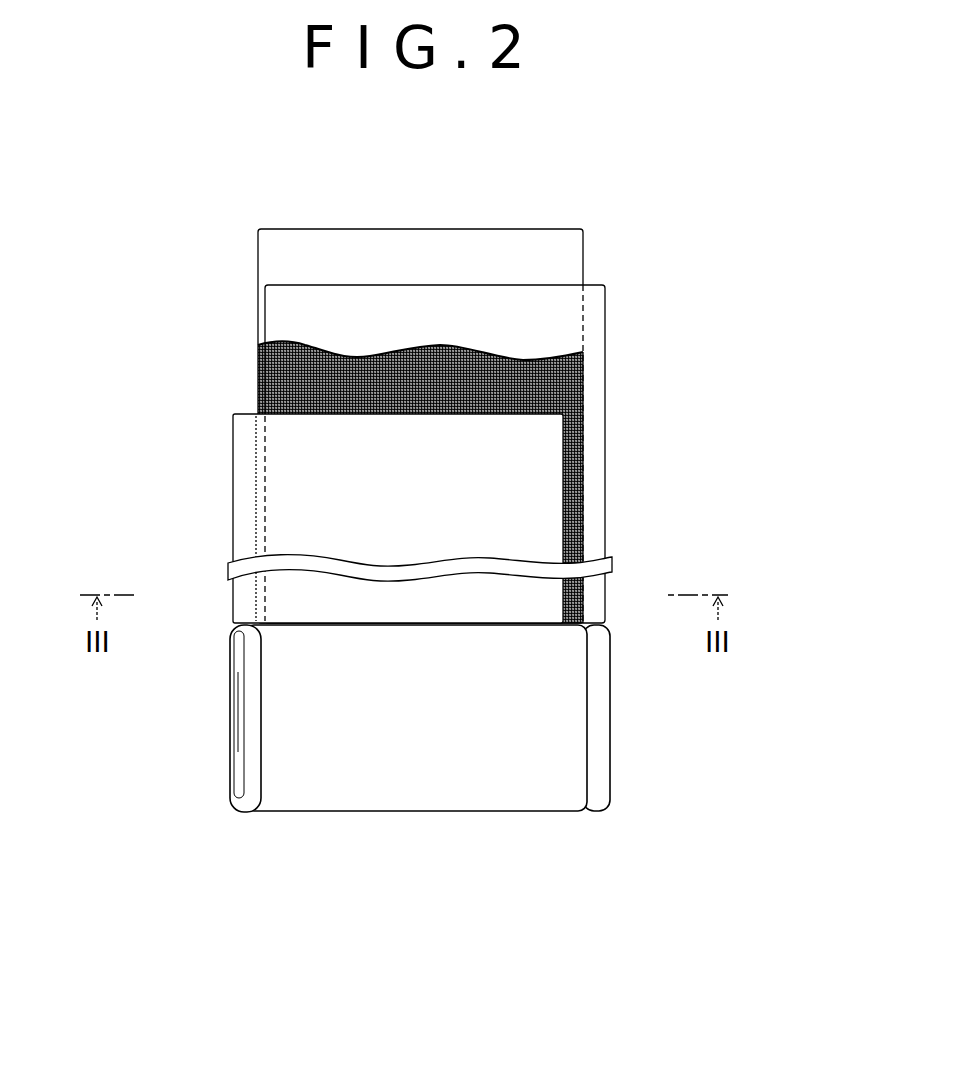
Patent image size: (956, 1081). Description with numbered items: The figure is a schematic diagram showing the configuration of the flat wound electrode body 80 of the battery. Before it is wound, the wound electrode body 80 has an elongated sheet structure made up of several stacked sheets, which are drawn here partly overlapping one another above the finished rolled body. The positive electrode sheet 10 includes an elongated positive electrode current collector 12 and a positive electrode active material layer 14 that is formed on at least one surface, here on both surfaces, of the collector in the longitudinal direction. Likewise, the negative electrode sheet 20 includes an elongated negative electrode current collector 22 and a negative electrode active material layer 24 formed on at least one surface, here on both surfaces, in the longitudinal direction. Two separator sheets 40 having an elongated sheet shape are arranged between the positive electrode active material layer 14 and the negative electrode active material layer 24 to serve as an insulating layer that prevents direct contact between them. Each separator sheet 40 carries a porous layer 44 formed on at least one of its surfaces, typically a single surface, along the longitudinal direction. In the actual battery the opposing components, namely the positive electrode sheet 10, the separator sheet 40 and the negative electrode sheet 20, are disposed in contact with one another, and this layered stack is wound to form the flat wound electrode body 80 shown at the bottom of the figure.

The positive electrode sheet 10 is at (343, 518).
The positive electrode current collector 12 is at (230, 483).
The positive electrode active material layer 14 is at (292, 432).
The negative electrode sheet 20 is at (497, 454).
The negative electrode current collector 22 is at (606, 462).
The negative electrode active material layer 24 is at (575, 310).
The separator sheet 40 is at (254, 252).
The porous layer 44 is at (290, 362).
The wound electrode body 80 is at (478, 800).